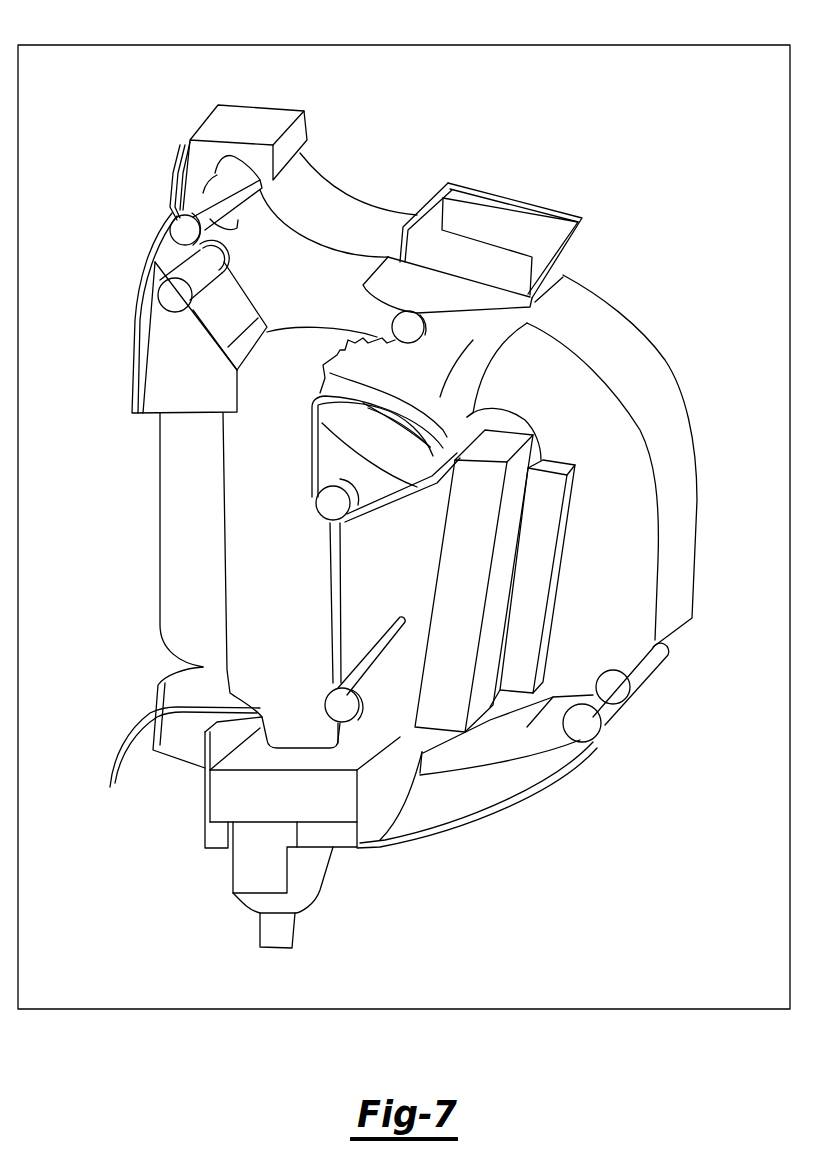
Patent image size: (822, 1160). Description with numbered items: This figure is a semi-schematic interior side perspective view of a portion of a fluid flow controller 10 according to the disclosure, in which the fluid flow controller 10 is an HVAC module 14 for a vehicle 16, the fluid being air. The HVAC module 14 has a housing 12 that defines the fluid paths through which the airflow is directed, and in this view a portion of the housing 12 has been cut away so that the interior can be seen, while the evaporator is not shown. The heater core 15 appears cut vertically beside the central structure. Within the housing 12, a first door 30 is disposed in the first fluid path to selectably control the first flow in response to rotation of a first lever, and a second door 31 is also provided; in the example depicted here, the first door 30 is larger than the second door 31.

The vehicle 16 is at (623, 44).
The HVAC module 14 is at (618, 152).
The fluid flow controller 10 is at (389, 526).
The housing 12 is at (598, 293).
The first door 30 is at (312, 453).
The heater core 15 is at (468, 543).
The second door 31 is at (342, 678).